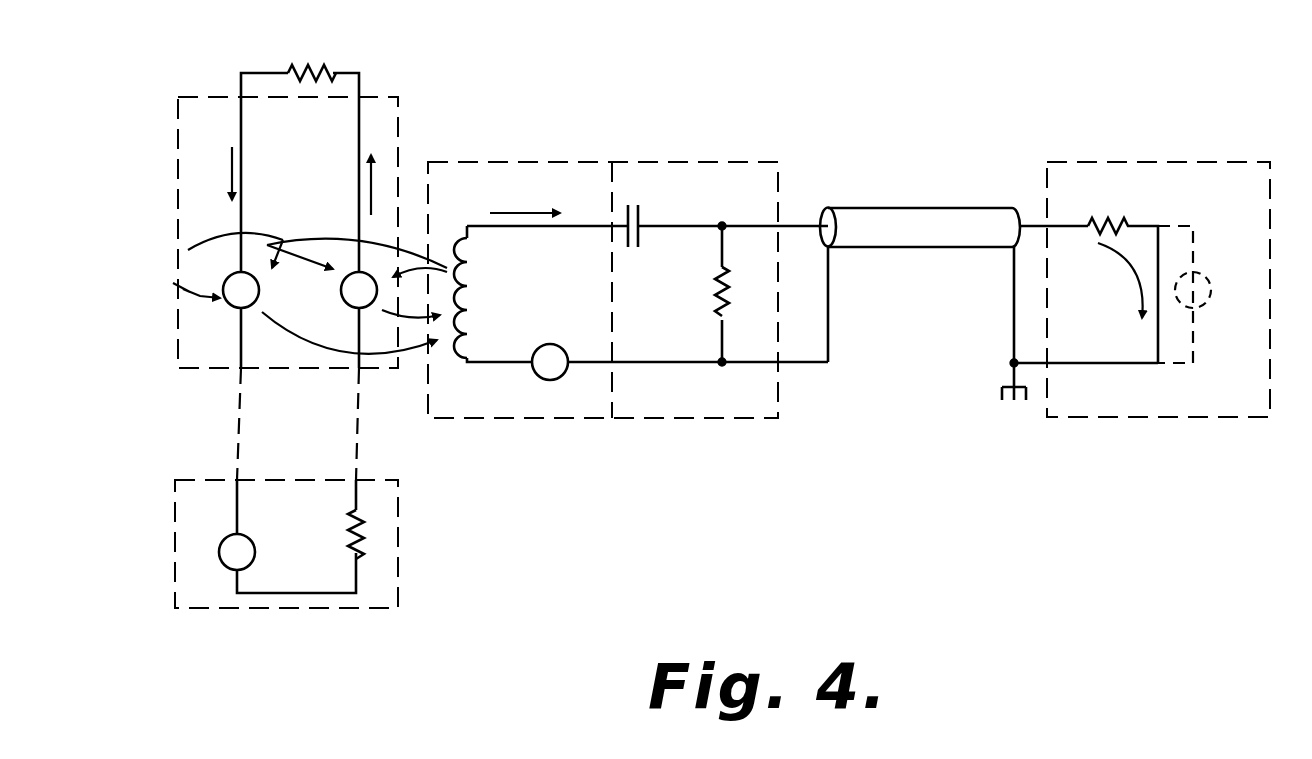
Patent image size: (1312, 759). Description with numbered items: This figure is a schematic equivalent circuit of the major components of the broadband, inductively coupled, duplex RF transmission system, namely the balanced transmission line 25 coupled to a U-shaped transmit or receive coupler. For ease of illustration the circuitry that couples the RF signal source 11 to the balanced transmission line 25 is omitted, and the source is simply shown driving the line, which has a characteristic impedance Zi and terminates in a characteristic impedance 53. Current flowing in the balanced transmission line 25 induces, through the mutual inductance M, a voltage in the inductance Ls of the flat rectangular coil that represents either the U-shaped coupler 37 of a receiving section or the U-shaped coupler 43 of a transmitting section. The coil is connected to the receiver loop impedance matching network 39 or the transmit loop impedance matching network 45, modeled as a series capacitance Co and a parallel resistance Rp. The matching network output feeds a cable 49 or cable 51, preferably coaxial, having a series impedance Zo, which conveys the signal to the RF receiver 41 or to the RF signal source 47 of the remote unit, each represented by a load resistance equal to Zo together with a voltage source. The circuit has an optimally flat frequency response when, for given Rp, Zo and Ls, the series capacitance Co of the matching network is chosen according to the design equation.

The balanced transmission line 25 is at (178, 103).
The characteristic impedance 53 is at (328, 68).
The RF signal source 11 is at (398, 598).
The U-shaped coupler 37 is at (628, 253).
The U-shaped coupler 43 is at (550, 162).
The receiver loop impedance matching network 39 is at (720, 269).
The transmit loop impedance matching network 45 is at (705, 145).
The cable 49 is at (989, 291).
The cable 51 is at (887, 250).
The RF receiver 41 is at (1172, 252).
The RF signal source 47 is at (1148, 162).